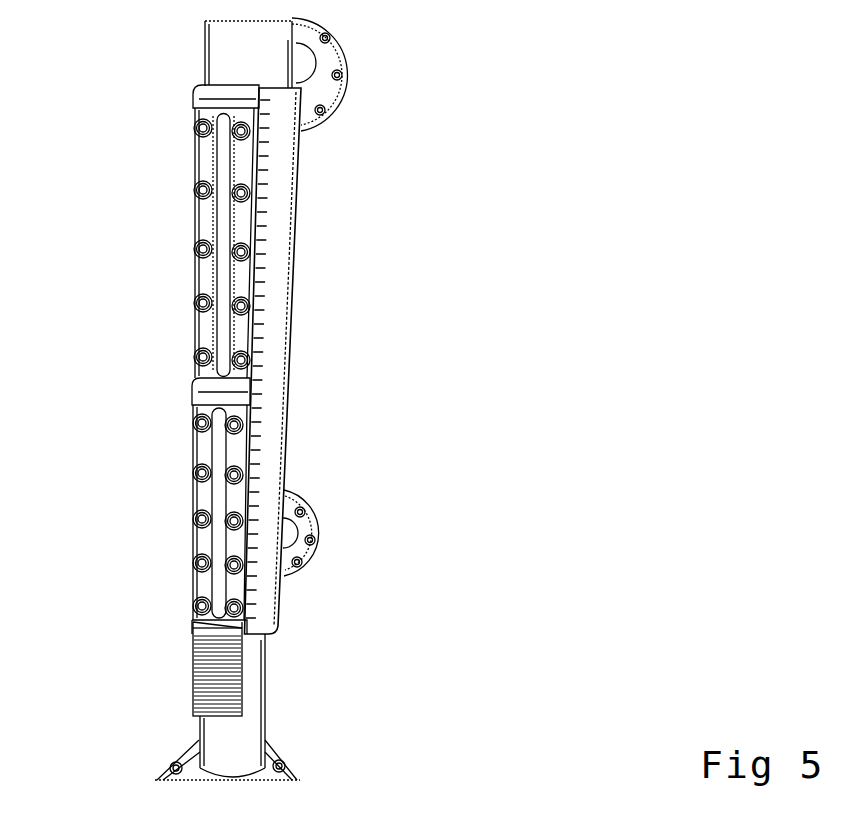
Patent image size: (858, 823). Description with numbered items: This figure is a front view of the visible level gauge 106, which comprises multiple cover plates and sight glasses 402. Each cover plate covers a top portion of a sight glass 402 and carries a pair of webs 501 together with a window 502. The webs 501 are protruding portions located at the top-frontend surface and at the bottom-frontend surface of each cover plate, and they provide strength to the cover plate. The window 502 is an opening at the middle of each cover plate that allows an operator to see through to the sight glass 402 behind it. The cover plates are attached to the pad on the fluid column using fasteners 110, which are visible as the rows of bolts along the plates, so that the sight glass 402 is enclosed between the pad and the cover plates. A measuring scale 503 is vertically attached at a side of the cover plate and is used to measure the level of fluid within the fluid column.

The webs 501 is at (212, 390).
The fasteners 110 is at (203, 128).
The window 502 is at (226, 189).
The measuring scale 503 is at (272, 263).
The sight glass 402 is at (218, 353).
The visible level gauge 106 is at (232, 450).